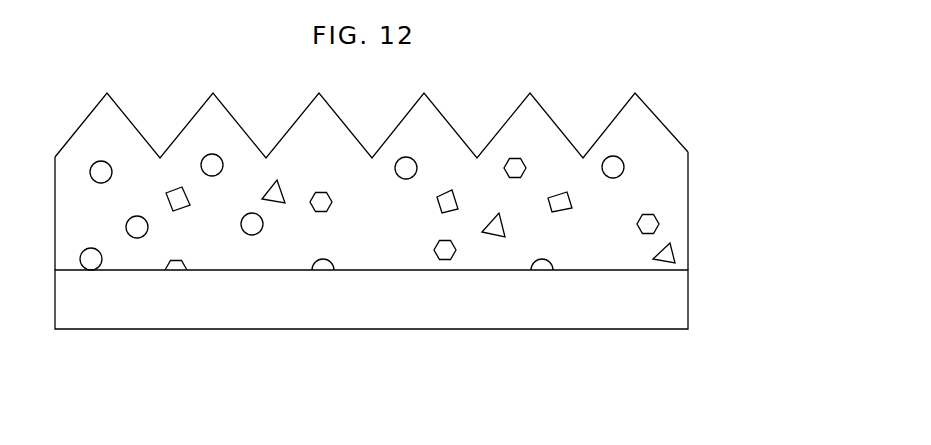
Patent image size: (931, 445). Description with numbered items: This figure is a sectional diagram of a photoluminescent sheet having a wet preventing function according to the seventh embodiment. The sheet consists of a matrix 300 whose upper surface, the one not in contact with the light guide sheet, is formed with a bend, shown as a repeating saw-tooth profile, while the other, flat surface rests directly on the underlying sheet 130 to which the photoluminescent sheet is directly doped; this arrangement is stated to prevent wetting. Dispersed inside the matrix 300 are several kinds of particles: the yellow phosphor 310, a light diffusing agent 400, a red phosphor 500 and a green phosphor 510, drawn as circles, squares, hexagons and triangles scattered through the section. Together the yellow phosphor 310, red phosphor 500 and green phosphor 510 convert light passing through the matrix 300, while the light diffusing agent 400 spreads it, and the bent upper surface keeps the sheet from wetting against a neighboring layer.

The matrix 300 is at (700, 200).
The yellow phosphor 310 is at (422, 132).
The diffusion sheet 130 is at (712, 285).
The light diffusing agent 400 is at (352, 268).
The red phosphor 500 is at (412, 271).
The green phosphor 510 is at (468, 280).